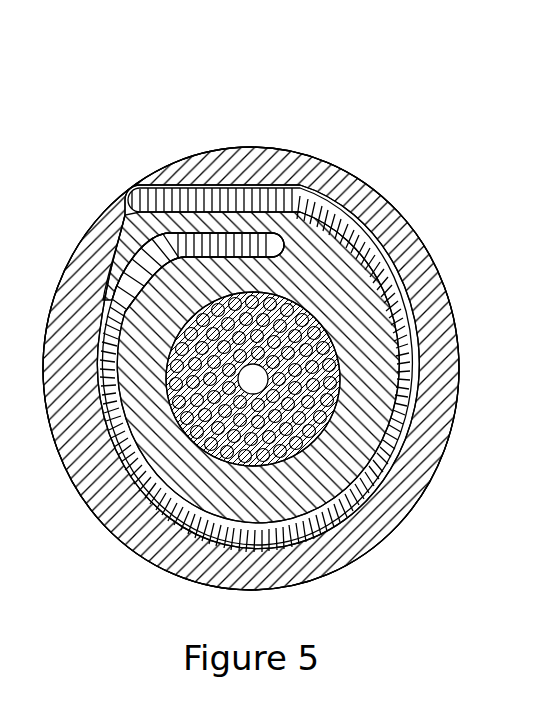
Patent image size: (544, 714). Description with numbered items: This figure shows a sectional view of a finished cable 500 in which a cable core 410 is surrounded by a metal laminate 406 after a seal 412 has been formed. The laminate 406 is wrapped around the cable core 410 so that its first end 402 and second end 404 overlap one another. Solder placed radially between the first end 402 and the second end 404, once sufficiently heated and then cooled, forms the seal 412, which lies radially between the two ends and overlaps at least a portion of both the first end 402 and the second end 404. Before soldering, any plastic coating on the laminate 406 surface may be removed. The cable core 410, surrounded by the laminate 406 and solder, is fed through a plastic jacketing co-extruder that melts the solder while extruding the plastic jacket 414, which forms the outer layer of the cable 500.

The fiber optic cable 500 is at (221, 106).
The first end 402 is at (288, 160).
The second end 404 is at (94, 264).
The laminate 406 is at (332, 218).
The cable core 410 is at (362, 442).
The seal 412 is at (176, 228).
The plastic jacket 414 is at (413, 250).